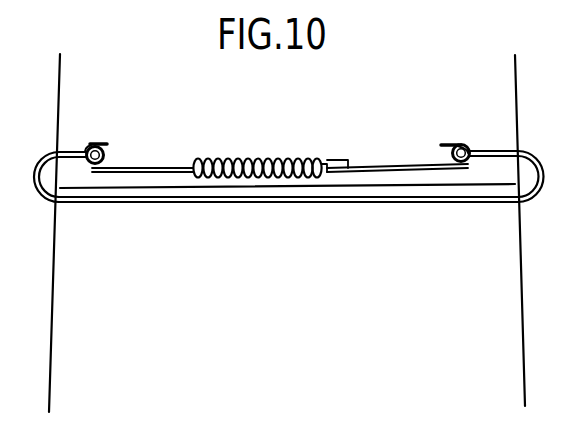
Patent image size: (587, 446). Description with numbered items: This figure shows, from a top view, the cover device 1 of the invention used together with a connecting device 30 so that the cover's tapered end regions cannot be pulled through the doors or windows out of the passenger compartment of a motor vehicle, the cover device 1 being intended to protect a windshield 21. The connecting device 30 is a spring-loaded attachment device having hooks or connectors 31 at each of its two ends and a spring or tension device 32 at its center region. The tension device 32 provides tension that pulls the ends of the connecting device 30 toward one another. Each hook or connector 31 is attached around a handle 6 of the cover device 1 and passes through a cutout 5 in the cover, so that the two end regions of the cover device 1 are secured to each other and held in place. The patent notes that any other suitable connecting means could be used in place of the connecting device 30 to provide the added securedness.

The cover device 1 is at (163, 212).
The cutout 5 is at (88, 148).
The handle 6 is at (110, 167).
The windshield 21 is at (145, 188).
The connecting device 30 is at (348, 160).
The hooks or connectors 31 is at (96, 142).
The spring or tension device 32 is at (238, 158).